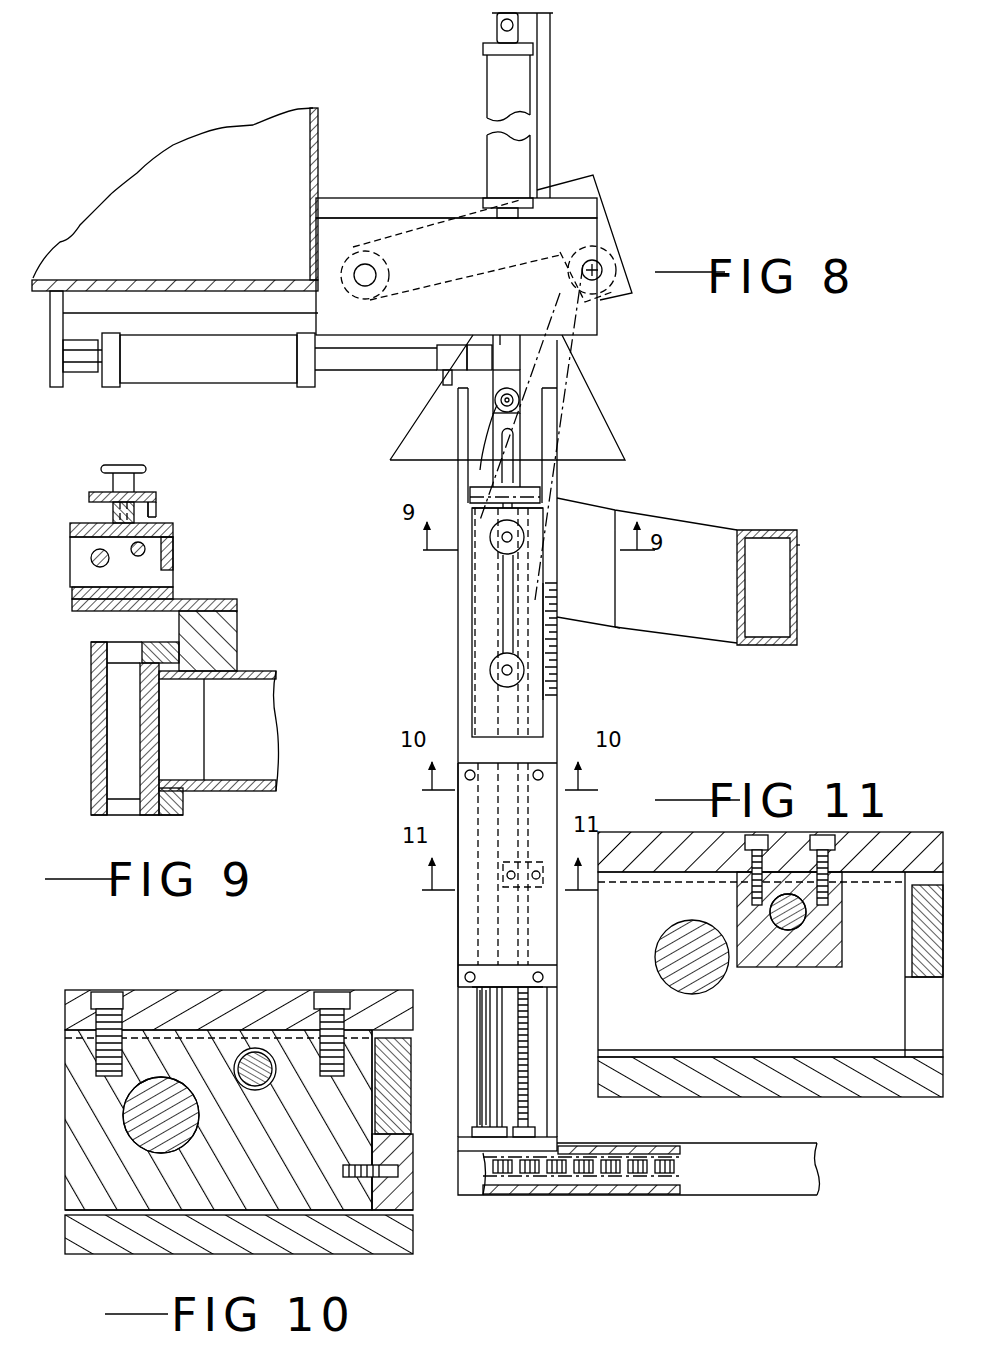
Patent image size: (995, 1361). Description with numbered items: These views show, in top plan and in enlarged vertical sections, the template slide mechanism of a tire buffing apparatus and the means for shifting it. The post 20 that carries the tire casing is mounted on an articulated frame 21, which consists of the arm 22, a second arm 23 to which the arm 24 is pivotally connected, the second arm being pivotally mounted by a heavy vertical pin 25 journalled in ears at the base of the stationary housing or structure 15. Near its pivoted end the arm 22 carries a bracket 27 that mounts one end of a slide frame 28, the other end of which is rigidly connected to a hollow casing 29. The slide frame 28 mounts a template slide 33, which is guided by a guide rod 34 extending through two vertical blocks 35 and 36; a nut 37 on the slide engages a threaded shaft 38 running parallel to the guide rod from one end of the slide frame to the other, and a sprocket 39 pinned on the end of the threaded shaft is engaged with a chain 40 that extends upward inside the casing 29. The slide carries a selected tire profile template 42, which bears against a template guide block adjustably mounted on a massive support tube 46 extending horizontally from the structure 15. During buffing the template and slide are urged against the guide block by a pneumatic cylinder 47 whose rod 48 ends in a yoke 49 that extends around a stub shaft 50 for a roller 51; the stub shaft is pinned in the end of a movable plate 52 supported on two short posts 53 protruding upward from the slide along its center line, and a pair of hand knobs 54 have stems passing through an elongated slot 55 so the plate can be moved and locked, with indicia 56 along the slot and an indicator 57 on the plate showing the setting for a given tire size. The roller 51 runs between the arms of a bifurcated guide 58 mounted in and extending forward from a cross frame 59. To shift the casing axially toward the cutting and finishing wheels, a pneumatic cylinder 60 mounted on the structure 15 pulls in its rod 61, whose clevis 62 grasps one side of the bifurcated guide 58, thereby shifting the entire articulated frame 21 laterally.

In FIG. 8, the stationary housing or structure 15 is at (326, 132).
In FIG. 8, the post 20 is at (800, 545).
In FIG. 8, the articulated frame 21 is at (710, 652).
In FIG. 8, the arm 22 is at (727, 532).
In FIG. 9, the arm 22 is at (270, 664).
In FIG. 8, the second arm 23 is at (613, 316).
In FIG. 9, the second arm 23 is at (85, 716).
In FIG. 8, the arm 24 is at (583, 175).
In FIG. 8, the heavy vertical pin 25 is at (338, 265).
In FIG. 8, the bracket 27 is at (617, 512).
In FIG. 9, the bracket 27 is at (246, 611).
In FIG. 8, the slide frame 28 is at (565, 1092).
In FIG. 9, the slide frame 28 is at (180, 576).
In FIG. 10, the slide frame 28 is at (390, 1256).
In FIG. 11, the slide frame 28 is at (793, 1098).
In FIG. 8, the hollow casing 29 is at (765, 1197).
In FIG. 8, the template slide 33 is at (566, 722).
In FIG. 9, the template slide 33 is at (173, 531).
In FIG. 10, the template slide 33 is at (225, 981).
In FIG. 11, the template slide 33 is at (921, 828).
In FIG. 8, the guide rod 34 is at (478, 1030).
In FIG. 9, the guide rod 34 is at (92, 560).
In FIG. 10, the guide rod 34 is at (159, 1076).
In FIG. 11, the guide rod 34 is at (675, 928).
In FIG. 8, the vertical block 35 is at (470, 788).
In FIG. 10, the vertical block 35 is at (63, 1172).
In FIG. 11, the vertical block 35 is at (598, 962).
In FIG. 8, the vertical block 36 is at (490, 962).
In FIG. 11, the nut 37 is at (843, 938).
In FIG. 8, the threaded shaft 38 is at (530, 1060).
In FIG. 9, the threaded shaft 38 is at (145, 549).
In FIG. 10, the threaded shaft 38 is at (257, 1054).
In FIG. 11, the threaded shaft 38 is at (797, 945).
In FIG. 8, the sprocket 39 is at (542, 1198).
In FIG. 8, the chain 40 is at (643, 1152).
In FIG. 8, the template 42 is at (628, 445).
In FIG. 8, the support tube 46 is at (383, 196).
In FIG. 8, the pneumatic cylinder 47 is at (530, 90).
In FIG. 8, the rod 48 is at (518, 358).
In FIG. 8, the yoke 49 is at (522, 385).
In FIG. 8, the stub shaft 50 is at (500, 408).
In FIG. 8, the roller 51 is at (530, 434).
In FIG. 8, the movable plate 52 is at (543, 663).
In FIG. 9, the movable plate 52 is at (156, 494).
In FIG. 8, the short post 53 is at (470, 578).
In FIG. 9, the short post 53 is at (113, 513).
In FIG. 8, the hand knob 54 is at (497, 553).
In FIG. 9, the hand knob 54 is at (134, 472).
In FIG. 8, the elongated slot 55 is at (505, 614).
In FIG. 8, the indicia 56 is at (565, 634).
In FIG. 9, the indicator 57 is at (171, 513).
In FIG. 8, the bifurcated guide 58 is at (543, 473).
In FIG. 8, the cross frame 59 is at (610, 207).
In FIG. 8, the pneumatic cylinder 60 is at (228, 385).
In FIG. 8, the rod 61 is at (343, 385).
In FIG. 8, the clevis 62 is at (445, 386).